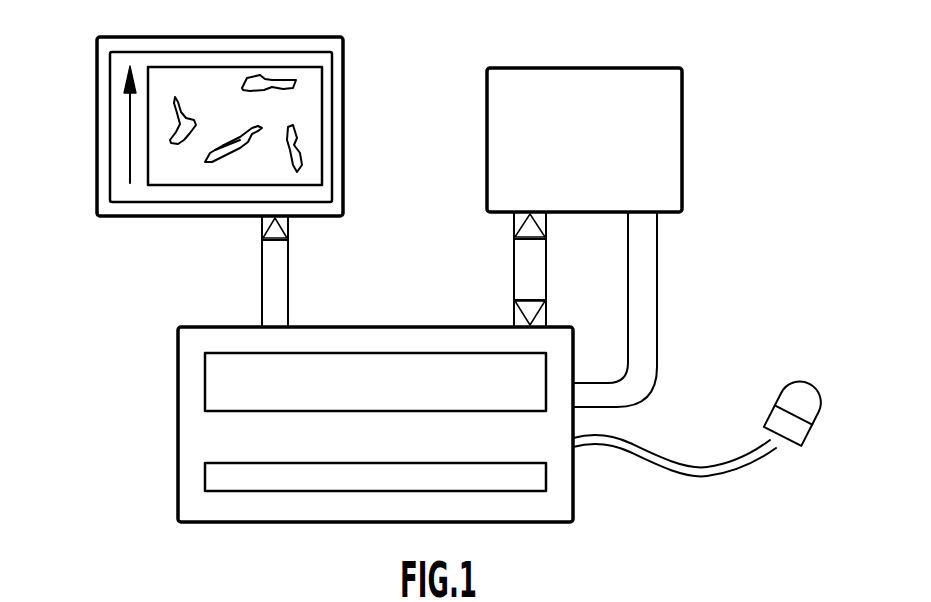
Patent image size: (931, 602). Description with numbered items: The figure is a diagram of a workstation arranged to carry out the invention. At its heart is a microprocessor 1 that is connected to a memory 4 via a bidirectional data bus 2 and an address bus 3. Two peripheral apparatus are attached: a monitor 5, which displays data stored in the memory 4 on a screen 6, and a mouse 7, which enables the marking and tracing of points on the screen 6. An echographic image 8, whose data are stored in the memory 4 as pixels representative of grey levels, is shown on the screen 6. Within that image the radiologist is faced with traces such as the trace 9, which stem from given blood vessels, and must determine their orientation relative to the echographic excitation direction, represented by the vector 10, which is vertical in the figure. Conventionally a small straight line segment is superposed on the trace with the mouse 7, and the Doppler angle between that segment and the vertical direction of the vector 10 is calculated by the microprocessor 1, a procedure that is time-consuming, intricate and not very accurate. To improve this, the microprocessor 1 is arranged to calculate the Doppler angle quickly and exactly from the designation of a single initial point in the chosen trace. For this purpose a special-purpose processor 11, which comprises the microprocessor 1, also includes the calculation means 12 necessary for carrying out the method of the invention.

The microprocessor 1 is at (222, 375).
The bidirectional data bus 2 is at (520, 267).
The address bus 3 is at (645, 315).
The memory 4 is at (665, 157).
The monitor 5 is at (120, 217).
The screen 6 is at (120, 110).
The mouse 7 is at (795, 430).
The echographic image 8 is at (307, 127).
The trace 9 is at (293, 76).
The vector 10 is at (130, 135).
The special-purpose processor 11 is at (195, 502).
The calculation means 12 is at (532, 475).